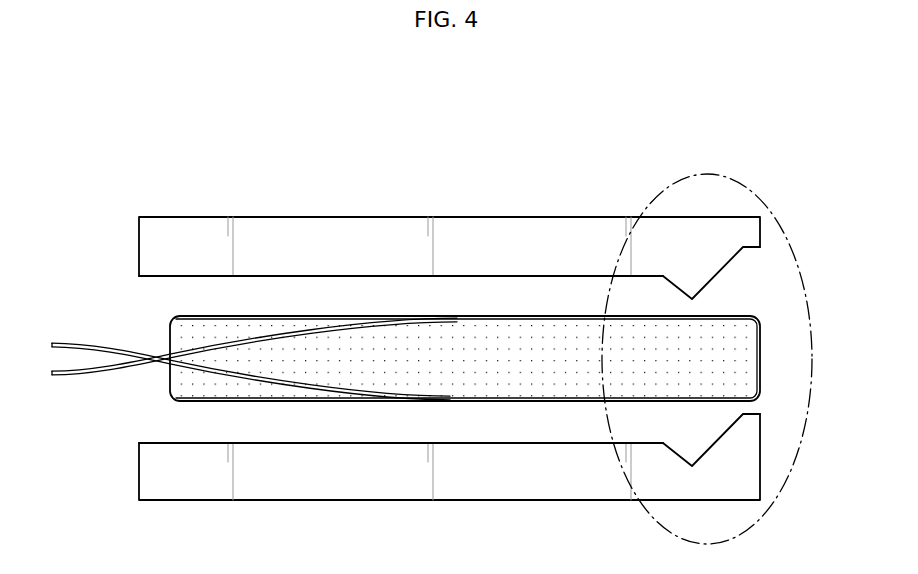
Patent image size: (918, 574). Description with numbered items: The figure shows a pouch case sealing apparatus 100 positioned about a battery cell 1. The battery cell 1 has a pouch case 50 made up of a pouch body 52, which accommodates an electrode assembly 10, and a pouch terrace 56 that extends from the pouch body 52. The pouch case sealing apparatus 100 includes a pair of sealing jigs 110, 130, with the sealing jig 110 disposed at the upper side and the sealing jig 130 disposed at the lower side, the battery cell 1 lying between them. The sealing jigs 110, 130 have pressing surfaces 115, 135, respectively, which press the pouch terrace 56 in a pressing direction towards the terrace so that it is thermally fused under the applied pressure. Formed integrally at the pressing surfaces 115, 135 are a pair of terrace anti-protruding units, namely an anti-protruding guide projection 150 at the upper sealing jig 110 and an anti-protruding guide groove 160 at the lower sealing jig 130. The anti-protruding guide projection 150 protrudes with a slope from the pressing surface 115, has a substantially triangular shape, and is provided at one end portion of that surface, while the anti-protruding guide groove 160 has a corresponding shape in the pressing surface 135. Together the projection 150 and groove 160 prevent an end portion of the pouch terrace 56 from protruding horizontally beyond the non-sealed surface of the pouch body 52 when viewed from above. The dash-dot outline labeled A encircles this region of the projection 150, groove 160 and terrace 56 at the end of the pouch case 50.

The pouch case sealing apparatus 100 is at (238, 136).
The sealing jig 110 is at (118, 240).
The pressing surface 115 is at (177, 277).
The sealing jig 130 is at (118, 463).
The pressing surface 135 is at (177, 442).
The anti-protruding guide projection 150 is at (741, 267).
The anti-protruding guide groove 160 is at (690, 444).
The battery cell 1 is at (83, 334).
The pouch case 50 is at (771, 322).
The pouch body 52 is at (168, 380).
The electrode assembly 10 is at (748, 346).
The pouch terrace 56 is at (197, 343).
The region A is at (749, 184).